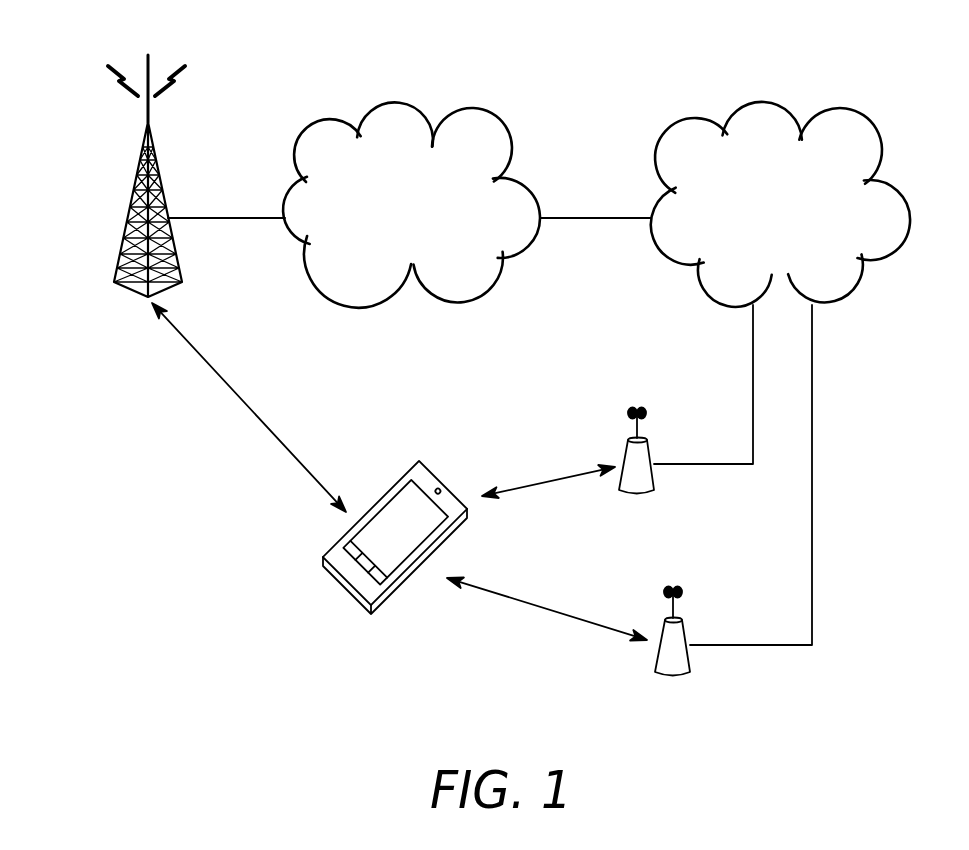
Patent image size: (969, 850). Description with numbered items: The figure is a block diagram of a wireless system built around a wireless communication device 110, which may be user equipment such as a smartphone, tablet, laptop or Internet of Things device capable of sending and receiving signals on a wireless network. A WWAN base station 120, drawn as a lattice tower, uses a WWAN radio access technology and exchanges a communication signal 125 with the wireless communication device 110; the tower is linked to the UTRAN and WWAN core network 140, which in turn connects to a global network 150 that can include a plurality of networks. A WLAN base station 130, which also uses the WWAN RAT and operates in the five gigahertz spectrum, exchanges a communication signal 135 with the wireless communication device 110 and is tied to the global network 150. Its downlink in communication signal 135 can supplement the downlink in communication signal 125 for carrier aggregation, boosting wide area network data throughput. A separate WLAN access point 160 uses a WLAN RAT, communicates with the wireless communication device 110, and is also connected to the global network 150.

The wireless communication device 110 is at (421, 460).
The WWAN base station 120 is at (127, 218).
The communication signal 125 is at (217, 373).
The WLAN base station 130 is at (638, 494).
The communication signal 135 is at (551, 481).
The UTRAN and WWAN core network 140 is at (401, 102).
The global network 150 is at (768, 102).
The WLAN access point 160 is at (683, 618).